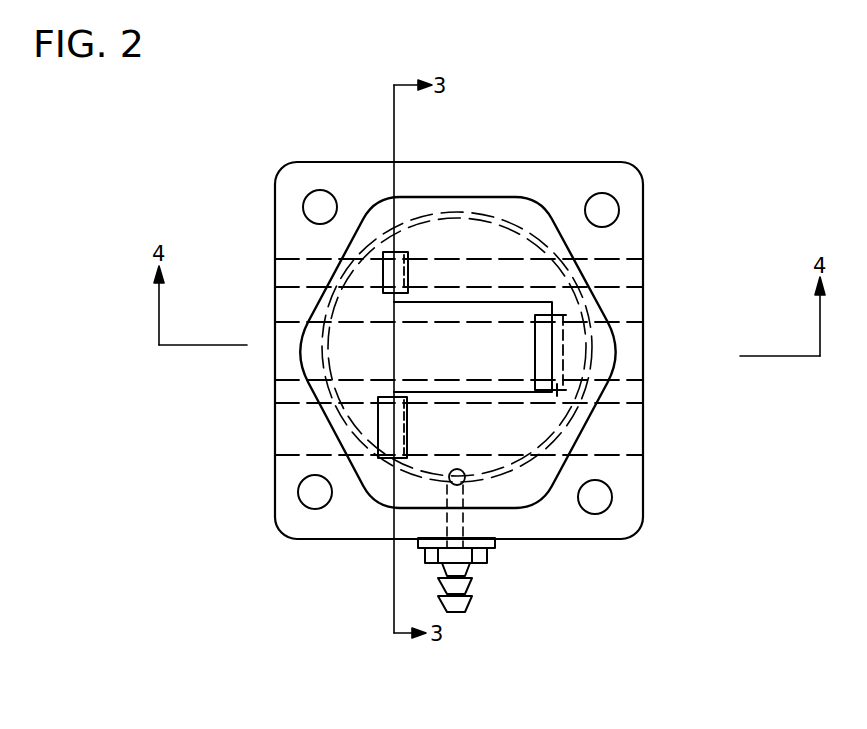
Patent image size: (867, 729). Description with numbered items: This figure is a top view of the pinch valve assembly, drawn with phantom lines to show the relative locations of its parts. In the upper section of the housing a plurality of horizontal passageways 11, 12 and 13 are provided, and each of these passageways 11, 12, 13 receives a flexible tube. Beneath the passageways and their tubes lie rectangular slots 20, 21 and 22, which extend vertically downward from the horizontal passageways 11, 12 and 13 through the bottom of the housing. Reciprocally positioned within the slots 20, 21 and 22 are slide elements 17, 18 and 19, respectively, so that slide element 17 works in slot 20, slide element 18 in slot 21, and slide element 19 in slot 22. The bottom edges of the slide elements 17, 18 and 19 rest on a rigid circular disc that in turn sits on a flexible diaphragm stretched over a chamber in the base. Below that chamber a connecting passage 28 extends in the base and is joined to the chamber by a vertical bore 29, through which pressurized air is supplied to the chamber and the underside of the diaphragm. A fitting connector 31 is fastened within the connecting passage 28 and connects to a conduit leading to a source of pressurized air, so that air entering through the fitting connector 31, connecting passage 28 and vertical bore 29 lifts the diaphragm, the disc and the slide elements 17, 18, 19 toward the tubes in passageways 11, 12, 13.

The horizontal passageway 11 is at (525, 443).
The horizontal passageway 12 is at (582, 358).
The horizontal passageway 13 is at (582, 265).
The slide element 17 is at (390, 435).
The slide element 18 is at (553, 372).
The slide element 19 is at (385, 253).
The rectangular slot 20 is at (390, 463).
The rectangular slot 21 is at (558, 388).
The rectangular slot 22 is at (409, 290).
The connecting passage 28 is at (485, 562).
The vertical bore 29 is at (460, 482).
The fitting connector 31 is at (423, 557).